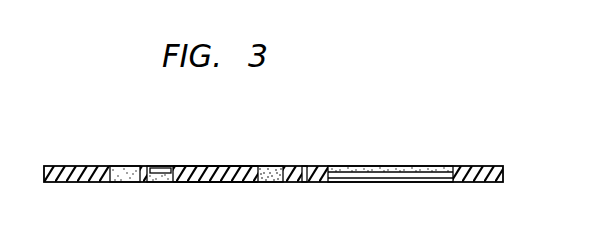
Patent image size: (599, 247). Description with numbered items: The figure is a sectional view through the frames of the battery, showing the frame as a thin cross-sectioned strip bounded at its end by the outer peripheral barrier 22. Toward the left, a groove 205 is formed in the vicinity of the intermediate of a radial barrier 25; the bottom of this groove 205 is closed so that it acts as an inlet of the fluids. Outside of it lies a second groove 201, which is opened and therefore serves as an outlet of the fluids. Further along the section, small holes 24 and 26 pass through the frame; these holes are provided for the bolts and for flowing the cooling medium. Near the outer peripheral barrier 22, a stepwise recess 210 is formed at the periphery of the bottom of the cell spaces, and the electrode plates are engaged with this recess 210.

The outer peripheral barrier 22 is at (480, 166).
The small hole 24 is at (273, 160).
The radial barrier 25 is at (206, 166).
The small hole 26 is at (306, 166).
The groove 201 is at (127, 182).
The groove 205 is at (157, 167).
The stepwise recess 210 is at (452, 166).